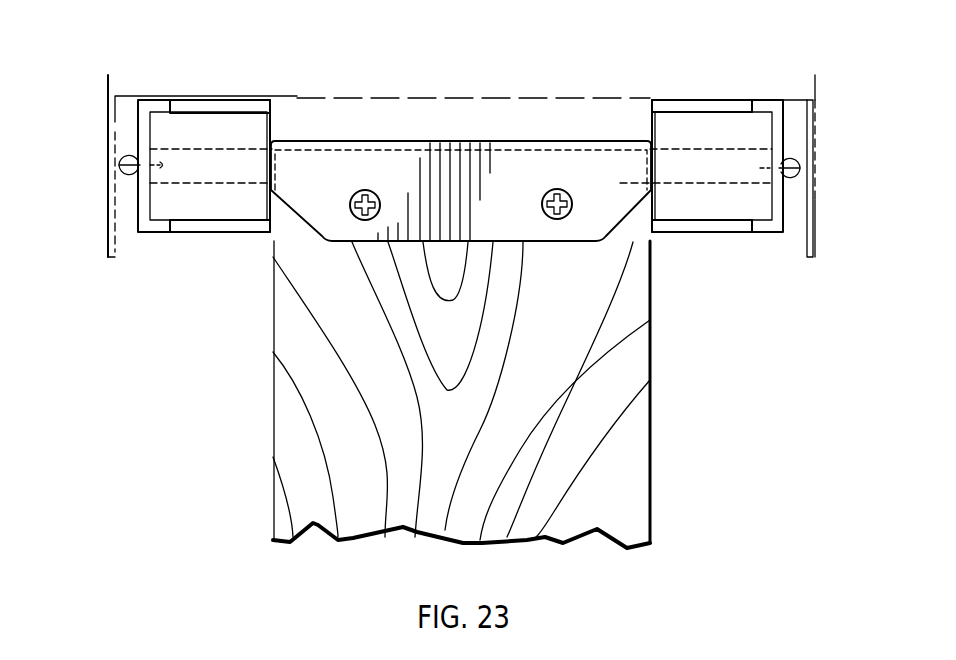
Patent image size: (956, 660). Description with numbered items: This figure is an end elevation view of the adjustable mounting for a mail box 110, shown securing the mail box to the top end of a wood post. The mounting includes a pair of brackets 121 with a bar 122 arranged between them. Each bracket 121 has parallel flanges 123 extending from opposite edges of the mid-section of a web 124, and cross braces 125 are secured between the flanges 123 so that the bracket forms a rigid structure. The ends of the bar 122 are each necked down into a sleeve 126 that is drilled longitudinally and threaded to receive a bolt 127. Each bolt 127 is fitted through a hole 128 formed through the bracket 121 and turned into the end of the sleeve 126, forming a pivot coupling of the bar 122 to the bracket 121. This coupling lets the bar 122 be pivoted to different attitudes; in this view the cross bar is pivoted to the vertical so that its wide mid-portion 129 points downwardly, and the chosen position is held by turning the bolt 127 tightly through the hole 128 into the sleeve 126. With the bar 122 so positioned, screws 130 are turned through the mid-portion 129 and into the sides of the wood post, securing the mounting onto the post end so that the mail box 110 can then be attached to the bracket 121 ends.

The mail box 110 is at (110, 175).
The bracket 121 is at (152, 233).
The bar 122 is at (408, 251).
The flange 123 is at (190, 102).
The web 124 is at (145, 125).
The cross brace 125 is at (180, 205).
The sleeve 126 is at (225, 153).
The bolt 127 is at (132, 178).
The hole 128 is at (138, 152).
The mid-portion 129 is at (515, 228).
The screw 130 is at (377, 193).